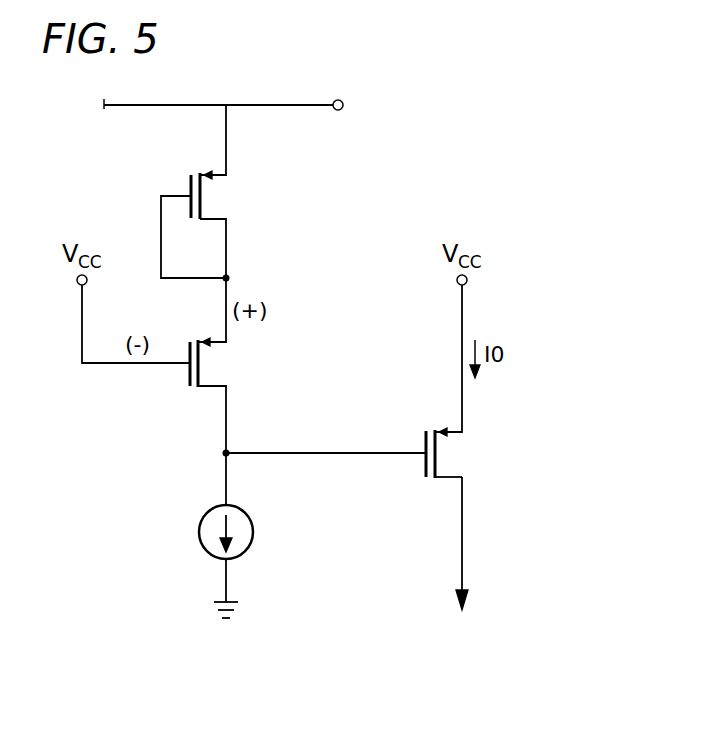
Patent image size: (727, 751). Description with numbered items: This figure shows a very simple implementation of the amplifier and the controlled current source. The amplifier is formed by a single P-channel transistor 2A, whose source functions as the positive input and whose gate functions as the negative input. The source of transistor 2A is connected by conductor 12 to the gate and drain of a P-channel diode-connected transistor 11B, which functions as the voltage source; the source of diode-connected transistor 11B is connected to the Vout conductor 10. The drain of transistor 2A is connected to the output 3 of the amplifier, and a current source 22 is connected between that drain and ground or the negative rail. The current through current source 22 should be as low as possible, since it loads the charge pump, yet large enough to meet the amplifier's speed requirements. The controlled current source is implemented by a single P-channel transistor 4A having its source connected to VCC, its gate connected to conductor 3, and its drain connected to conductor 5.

The Vout conductor 10 is at (278, 104).
The P-channel diode-connected transistor 11B is at (190, 184).
The conductor 12 is at (228, 246).
The P-channel transistor 2A is at (188, 374).
The output of amplifier 3 is at (322, 452).
The P-channel transistor 4A is at (424, 467).
The conductor 5 is at (464, 545).
The current source 22 is at (205, 553).